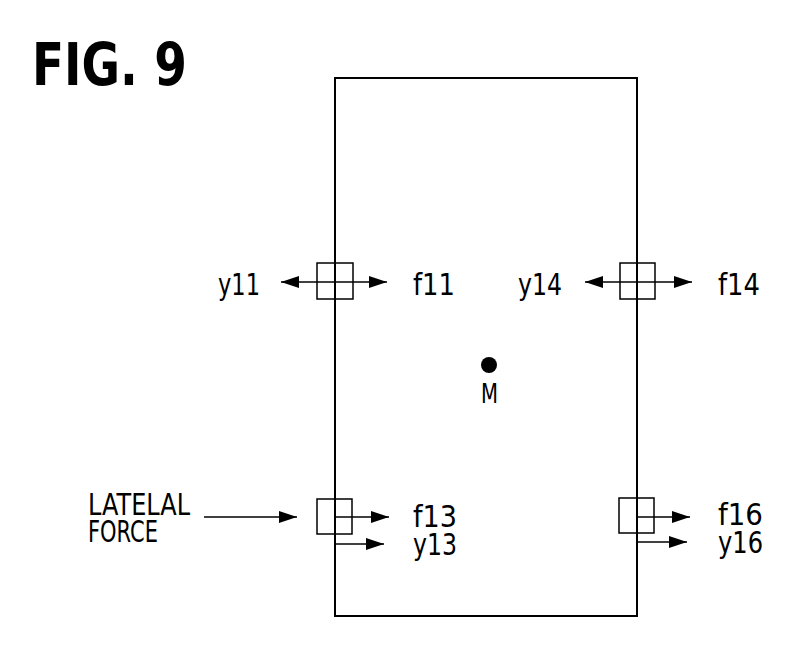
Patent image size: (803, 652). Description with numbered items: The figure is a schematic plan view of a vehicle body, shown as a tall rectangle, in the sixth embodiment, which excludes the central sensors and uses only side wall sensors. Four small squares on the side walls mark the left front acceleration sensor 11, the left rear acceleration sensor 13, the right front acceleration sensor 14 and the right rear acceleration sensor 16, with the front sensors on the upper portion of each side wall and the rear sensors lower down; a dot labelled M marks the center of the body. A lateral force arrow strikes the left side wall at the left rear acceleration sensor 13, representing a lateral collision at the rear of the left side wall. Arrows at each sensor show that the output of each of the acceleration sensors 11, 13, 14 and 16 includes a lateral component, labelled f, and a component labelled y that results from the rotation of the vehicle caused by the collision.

The left front acceleration sensor 11 is at (327, 263).
The left rear acceleration sensor 13 is at (327, 499).
The right front acceleration sensor 14 is at (643, 262).
The right rear acceleration sensor 16 is at (643, 498).